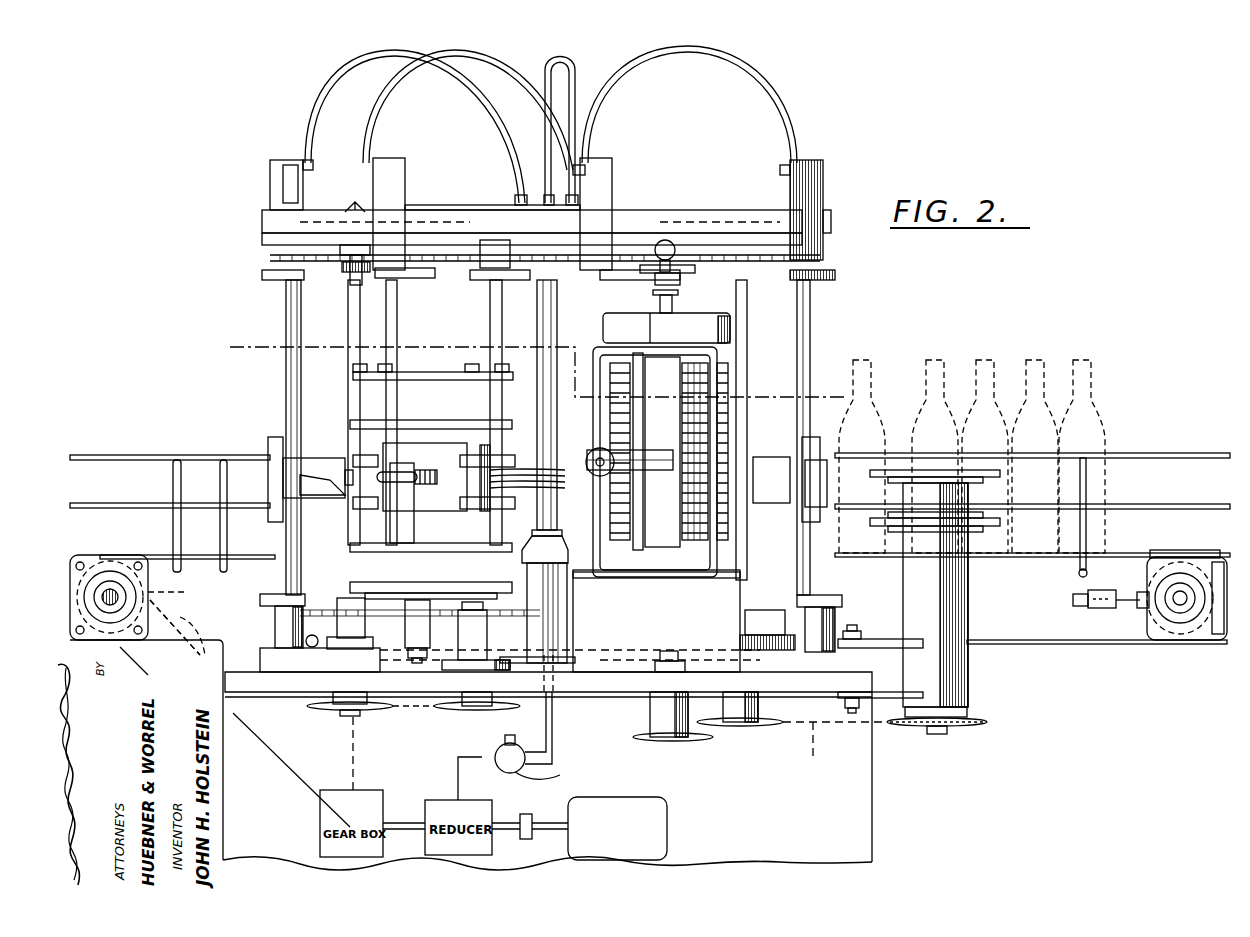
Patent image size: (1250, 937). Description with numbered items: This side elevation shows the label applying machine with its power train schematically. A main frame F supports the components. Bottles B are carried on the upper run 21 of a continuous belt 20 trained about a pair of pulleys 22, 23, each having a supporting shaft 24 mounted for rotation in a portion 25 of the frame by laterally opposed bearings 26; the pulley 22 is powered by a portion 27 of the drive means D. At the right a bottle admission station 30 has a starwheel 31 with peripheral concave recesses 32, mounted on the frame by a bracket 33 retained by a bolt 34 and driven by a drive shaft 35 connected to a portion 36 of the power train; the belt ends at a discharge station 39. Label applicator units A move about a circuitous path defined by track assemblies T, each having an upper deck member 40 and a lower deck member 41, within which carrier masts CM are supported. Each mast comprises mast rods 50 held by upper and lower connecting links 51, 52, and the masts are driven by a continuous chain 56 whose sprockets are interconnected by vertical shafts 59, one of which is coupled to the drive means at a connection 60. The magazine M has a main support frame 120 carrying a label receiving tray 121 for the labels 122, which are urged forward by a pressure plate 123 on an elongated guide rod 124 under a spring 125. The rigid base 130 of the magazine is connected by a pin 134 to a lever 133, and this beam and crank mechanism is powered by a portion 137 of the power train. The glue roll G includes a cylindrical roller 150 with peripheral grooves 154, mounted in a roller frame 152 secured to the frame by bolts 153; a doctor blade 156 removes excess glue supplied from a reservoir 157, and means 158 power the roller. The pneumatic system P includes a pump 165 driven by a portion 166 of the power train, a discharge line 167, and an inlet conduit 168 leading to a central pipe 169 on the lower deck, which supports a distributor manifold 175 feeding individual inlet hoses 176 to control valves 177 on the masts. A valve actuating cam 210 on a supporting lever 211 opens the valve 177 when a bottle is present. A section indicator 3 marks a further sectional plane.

The inlet hoses 176 is at (590, 88).
The control valves 177 is at (290, 162).
The pneumatic system P is at (588, 153).
The valve actuating cam 210 is at (370, 205).
The supporting lever 211 is at (470, 207).
The distributor manifold 175 is at (516, 203).
The upper deck member 40 is at (635, 210).
The track assemblies T is at (250, 220).
The upper connecting links 51 is at (262, 275).
The carrier masts CM is at (395, 328).
The mast rods 50 is at (300, 324).
The central pipe 169 is at (545, 330).
The vertical shafts 59 is at (348, 358).
The section line 3 is at (232, 378).
The main support frame 120 is at (398, 370).
The magazine M is at (380, 428).
The label applicator units A is at (271, 430).
The pressure plate 123 is at (395, 450).
The guide rod 124 is at (400, 470).
The spring 125 is at (428, 470).
The labels 122 is at (525, 484).
The discharge station 39 is at (70, 474).
The bearings 26 is at (105, 570).
The supporting shaft 24 is at (112, 595).
The pulley 22 is at (176, 617).
The lower connecting links 52 is at (262, 598).
The drive means portion 27 is at (195, 644).
The rigid base 130 is at (413, 565).
The label receiving tray 121 is at (450, 510).
The cylindrical roller 150 is at (728, 408).
The roller frame 152 is at (710, 426).
The glue dispensing roll G is at (725, 366).
The bottles B is at (882, 356).
The bottle admission station 30 is at (1052, 433).
The peripheral concave recesses 32 is at (945, 470).
The starwheel 31 is at (1000, 522).
The upper run 21 is at (1128, 557).
The continuous belt 20 is at (1165, 557).
The pulley 23 is at (1148, 576).
The frame portion 25 is at (1032, 642).
The peripheral grooves 154 is at (725, 530).
The doctor blade 156 is at (625, 553).
The reservoir 157 is at (657, 601).
The continuous chain 56 is at (545, 612).
The bolt 34 is at (852, 630).
The bolts 153 is at (670, 658).
The pin 134 is at (405, 662).
The lever 133 is at (448, 635).
The lower deck member 41 is at (225, 677).
The drive connection 60 is at (355, 743).
The power train portion 137 is at (420, 715).
The power train portion 166 is at (455, 768).
The discharge line 167 is at (500, 758).
The pump 165 is at (548, 757).
The inlet conduit 168 is at (553, 720).
The roller drive means 158 is at (672, 742).
The power train portion 36 is at (835, 748).
The bracket 33 is at (885, 700).
The drive shaft 35 is at (937, 734).
The drive means D is at (681, 843).
The main frame F is at (885, 835).